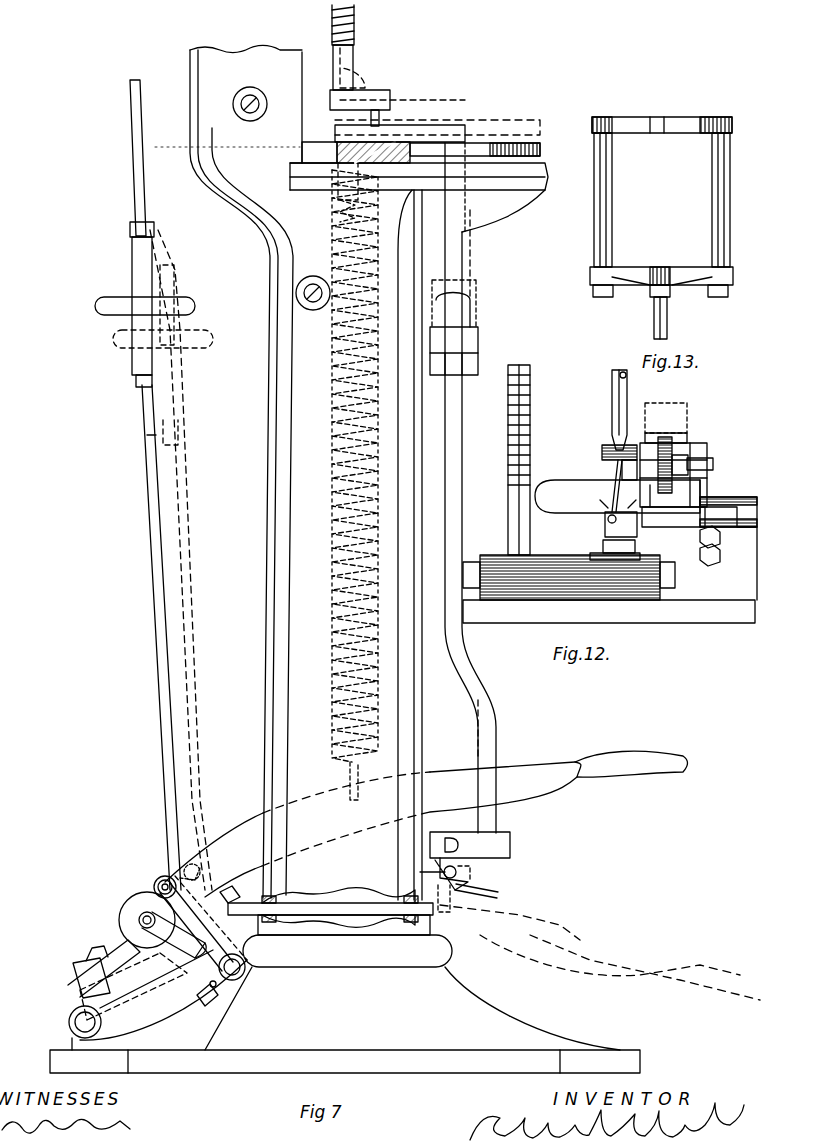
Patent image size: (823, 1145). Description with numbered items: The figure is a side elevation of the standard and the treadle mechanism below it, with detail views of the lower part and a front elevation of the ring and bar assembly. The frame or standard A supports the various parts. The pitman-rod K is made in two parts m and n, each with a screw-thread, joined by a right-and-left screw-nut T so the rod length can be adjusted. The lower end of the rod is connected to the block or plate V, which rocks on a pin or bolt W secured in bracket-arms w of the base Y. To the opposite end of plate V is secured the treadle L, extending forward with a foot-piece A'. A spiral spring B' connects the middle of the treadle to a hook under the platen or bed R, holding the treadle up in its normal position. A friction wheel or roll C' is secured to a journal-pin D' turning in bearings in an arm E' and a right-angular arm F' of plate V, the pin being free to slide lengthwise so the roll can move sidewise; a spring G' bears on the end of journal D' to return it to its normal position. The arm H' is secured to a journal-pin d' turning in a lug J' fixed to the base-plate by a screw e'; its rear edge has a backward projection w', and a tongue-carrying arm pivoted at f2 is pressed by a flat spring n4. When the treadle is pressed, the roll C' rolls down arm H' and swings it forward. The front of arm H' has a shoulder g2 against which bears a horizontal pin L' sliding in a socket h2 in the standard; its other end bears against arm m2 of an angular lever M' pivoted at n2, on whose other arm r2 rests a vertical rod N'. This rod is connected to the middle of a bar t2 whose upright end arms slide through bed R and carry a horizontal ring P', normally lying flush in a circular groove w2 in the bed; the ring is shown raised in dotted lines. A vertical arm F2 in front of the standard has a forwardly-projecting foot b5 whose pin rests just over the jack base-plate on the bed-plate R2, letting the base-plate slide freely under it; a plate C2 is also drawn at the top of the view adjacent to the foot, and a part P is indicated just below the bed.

In FIG. 7, the frame or standard A is at (242, 471).
In FIG. 7, the foot-piece A' is at (559, 770).
In FIG. 7, the platen or bed R is at (408, 178).
In FIG. 7, the bed-plate R2 is at (462, 143).
In FIG. 7, the pin P is at (335, 192).
In FIG. 7, the horizontal ring P' is at (437, 118).
In FIG. 13, the horizontal ring P' is at (662, 112).
In FIG. 7, the circular groove w2 is at (356, 153).
In FIG. 13, the circular groove w2 is at (605, 205).
In FIG. 7, the vertical arm F2 is at (345, 78).
In FIG. 7, the forwardly-projecting foot b5 is at (378, 112).
In FIG. 7, the plate C2 is at (380, 125).
In FIG. 7, the spiral spring B' is at (341, 485).
In FIG. 7, the vertical rod N' is at (478, 488).
In FIG. 13, the vertical rod N' is at (675, 318).
In FIG. 7, the pitman-rod K is at (150, 492).
In FIG. 12, the pitman-rod K is at (612, 405).
In FIG. 7, the part of pitman-rod m is at (134, 272).
In FIG. 7, the screw-nut T is at (95, 307).
In FIG. 7, the part of pitman-rod n is at (148, 436).
In FIG. 7, the treadle L is at (297, 834).
In FIG. 12, the treadle L is at (533, 460).
In FIG. 7, the flat spring n4 is at (190, 866).
In FIG. 12, the flat spring n4 is at (660, 430).
In FIG. 7, the arm H' is at (203, 909).
In FIG. 12, the arm H' is at (678, 450).
In FIG. 7, the pivot f2 is at (158, 886).
In FIG. 7, the bearing place or shoulder g2 is at (228, 892).
In FIG. 7, the socket h2 is at (288, 900).
In FIG. 7, the horizontal pin L' is at (330, 900).
In FIG. 7, the pivot n2 is at (443, 862).
In FIG. 7, the arm of angular lever r2 is at (460, 878).
In FIG. 7, the angular lever M' is at (486, 865).
In FIG. 7, the arm of angular lever m2 is at (470, 915).
In FIG. 7, the friction wheel or roll C' is at (141, 918).
In FIG. 12, the friction wheel or roll C' is at (687, 468).
In FIG. 7, the journal-pin D' is at (144, 935).
In FIG. 12, the journal-pin D' is at (720, 468).
In FIG. 7, the right-angular arm F' is at (127, 978).
In FIG. 12, the right-angular arm F' is at (708, 458).
In FIG. 7, the spring G' is at (86, 972).
In FIG. 12, the spring G' is at (607, 507).
In FIG. 7, the screw e' is at (156, 981).
In FIG. 7, the lug J' is at (221, 993).
In FIG. 12, the lug J' is at (681, 536).
In FIG. 7, the journal-pin d' is at (248, 971).
In FIG. 12, the journal-pin d' is at (728, 501).
In FIG. 7, the pin or bolt W is at (74, 1022).
In FIG. 12, the pin or bolt W is at (593, 577).
In FIG. 7, the bracket-arms w is at (55, 1041).
In FIG. 12, the bracket-arms w is at (476, 558).
In FIG. 12, the backward projection w' is at (648, 592).
In FIG. 7, the base Y is at (195, 1060).
In FIG. 12, the base Y is at (523, 618).
In FIG. 12, the block or plate V is at (570, 558).
In FIG. 12, the arm E' is at (610, 470).
In FIG. 13, the bar t2 is at (661, 269).